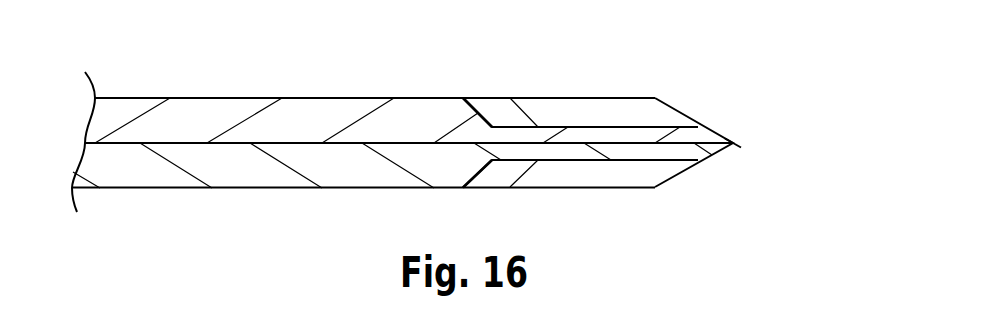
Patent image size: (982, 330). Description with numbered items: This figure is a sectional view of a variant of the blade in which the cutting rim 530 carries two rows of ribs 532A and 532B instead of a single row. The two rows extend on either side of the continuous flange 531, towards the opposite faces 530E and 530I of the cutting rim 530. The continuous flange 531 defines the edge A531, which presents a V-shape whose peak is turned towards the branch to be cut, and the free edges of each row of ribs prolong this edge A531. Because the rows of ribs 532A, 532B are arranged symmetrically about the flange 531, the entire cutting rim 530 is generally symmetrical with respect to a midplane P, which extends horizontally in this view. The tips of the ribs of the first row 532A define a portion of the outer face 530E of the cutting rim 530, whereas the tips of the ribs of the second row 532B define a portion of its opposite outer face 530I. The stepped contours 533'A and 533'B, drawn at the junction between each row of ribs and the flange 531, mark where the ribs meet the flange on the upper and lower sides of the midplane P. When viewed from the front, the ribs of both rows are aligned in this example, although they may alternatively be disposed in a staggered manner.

The cutting rim 530 is at (750, 127).
The outer face of the cutting rim 530E is at (240, 92).
The outer face of the cutting rim 530I is at (255, 200).
The continuous flange 531 is at (648, 138).
The edge A531 is at (736, 148).
The first stepped edge 533'A is at (566, 80).
The second stepped edge 533'B is at (534, 195).
The first row of ribs 532A is at (590, 112).
The second row of ribs 532B is at (603, 173).
The midplane P is at (390, 142).